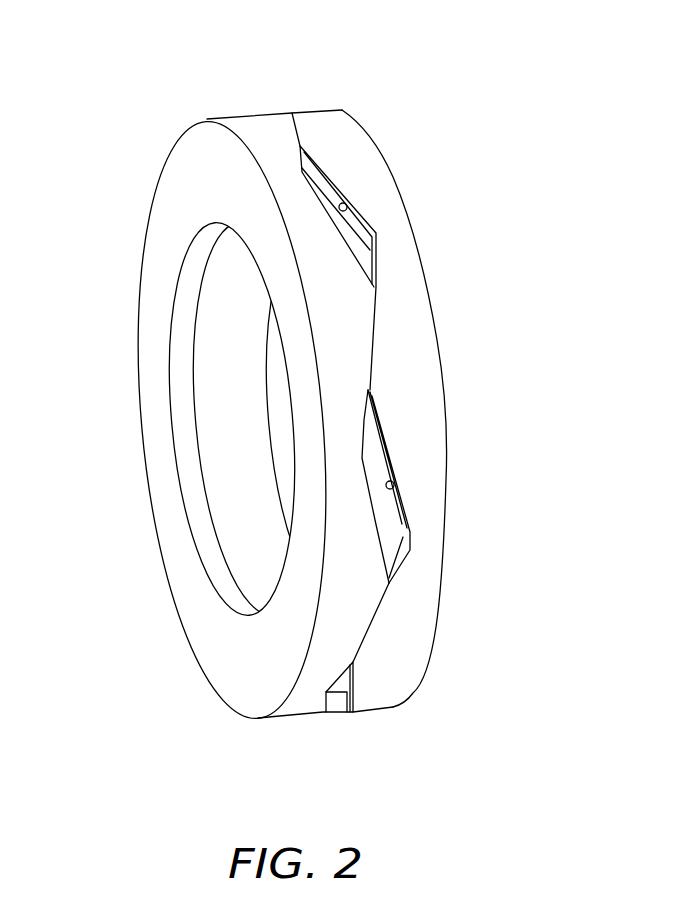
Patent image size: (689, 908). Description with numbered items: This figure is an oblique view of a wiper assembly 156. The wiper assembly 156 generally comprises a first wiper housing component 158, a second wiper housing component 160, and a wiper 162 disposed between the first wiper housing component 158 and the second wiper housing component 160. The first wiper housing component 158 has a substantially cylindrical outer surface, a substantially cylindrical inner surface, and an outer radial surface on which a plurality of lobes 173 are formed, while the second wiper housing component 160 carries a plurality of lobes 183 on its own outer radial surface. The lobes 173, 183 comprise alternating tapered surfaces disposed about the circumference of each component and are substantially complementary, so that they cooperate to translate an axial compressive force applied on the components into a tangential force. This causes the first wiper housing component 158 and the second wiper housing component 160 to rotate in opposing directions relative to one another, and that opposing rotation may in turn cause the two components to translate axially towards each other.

The wiper assembly 156 is at (295, 376).
The first wiper housing component 158 is at (209, 117).
The second wiper housing component 160 is at (319, 109).
The wiper 162 is at (230, 267).
The lobes 173 is at (355, 253).
The lobes 183 is at (347, 210).